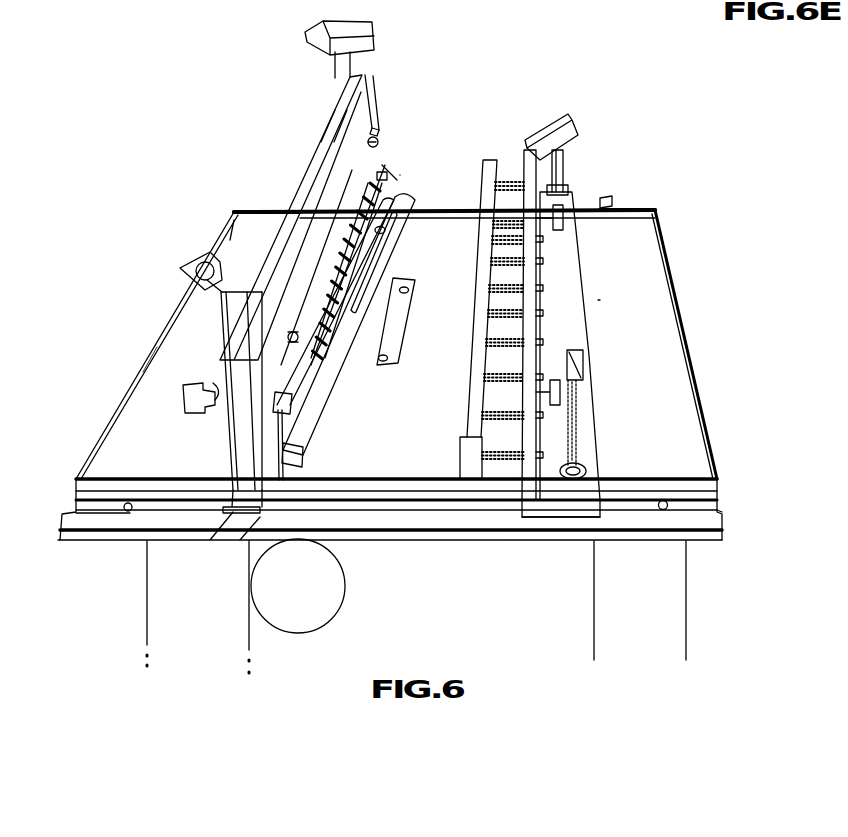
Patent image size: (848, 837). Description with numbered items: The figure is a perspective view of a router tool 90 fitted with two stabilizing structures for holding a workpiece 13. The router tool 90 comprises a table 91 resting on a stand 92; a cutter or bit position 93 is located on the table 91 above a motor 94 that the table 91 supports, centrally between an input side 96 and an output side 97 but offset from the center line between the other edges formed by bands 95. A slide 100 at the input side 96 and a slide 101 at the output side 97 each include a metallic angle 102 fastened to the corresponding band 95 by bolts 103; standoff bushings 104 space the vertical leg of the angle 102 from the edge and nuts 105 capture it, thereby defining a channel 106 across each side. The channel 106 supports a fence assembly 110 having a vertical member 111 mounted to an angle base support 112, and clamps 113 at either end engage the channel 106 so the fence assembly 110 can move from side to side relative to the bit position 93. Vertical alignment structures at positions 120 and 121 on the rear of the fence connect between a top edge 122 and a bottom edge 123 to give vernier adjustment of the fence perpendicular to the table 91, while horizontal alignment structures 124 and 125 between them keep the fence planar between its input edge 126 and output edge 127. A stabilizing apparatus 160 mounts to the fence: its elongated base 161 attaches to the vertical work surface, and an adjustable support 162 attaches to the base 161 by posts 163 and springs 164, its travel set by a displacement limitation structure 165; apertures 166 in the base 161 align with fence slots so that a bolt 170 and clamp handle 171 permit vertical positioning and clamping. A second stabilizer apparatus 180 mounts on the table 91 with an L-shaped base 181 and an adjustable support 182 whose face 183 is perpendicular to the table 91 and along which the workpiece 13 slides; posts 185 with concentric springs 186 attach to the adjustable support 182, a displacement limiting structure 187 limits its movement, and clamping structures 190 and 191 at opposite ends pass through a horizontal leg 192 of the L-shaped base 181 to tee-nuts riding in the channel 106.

The workpiece 13 is at (354, 385).
The router tool 90 is at (91, 417).
The table 91 is at (645, 295).
The stand 92 is at (147, 590).
The cutter or bit position 93 is at (400, 327).
The motor 94 is at (344, 600).
The bands 95 is at (157, 347).
The input side 96 is at (452, 180).
The output side 97 is at (427, 553).
The slide 100 is at (628, 200).
The slide 101 is at (720, 520).
The angle 102 is at (545, 518).
The bolts 103 is at (120, 512).
The standoff bushings 104 is at (130, 503).
The nuts 105 is at (118, 518).
The channel 106 is at (655, 210).
The fence assembly 110 is at (325, 116).
The vertical member 111 is at (320, 148).
The base support 112 is at (225, 520).
The clamps 113 is at (307, 40).
The vertical alignment structure 120 is at (250, 320).
The vertical alignment structure 121 is at (325, 130).
The top edge 122 is at (365, 74).
The bottom edge 123 is at (258, 542).
The horizontal alignment structure 124 is at (236, 214).
The horizontal alignment structure 125 is at (230, 244).
The input edge 126 is at (368, 95).
The output edge 127 is at (258, 520).
The stabilizing apparatus 160 is at (410, 170).
The elongated base 161 is at (378, 195).
The adjustable support 162 is at (386, 231).
The posts 163 is at (385, 170).
The springs 164 is at (402, 174).
The displacement limitation structure 165 is at (288, 337).
The apertures 166 is at (312, 295).
The bolt 170 is at (214, 411).
The clamp handle 171 is at (184, 390).
The second stabilizer apparatus 180 is at (639, 265).
The L-shaped base 181 is at (570, 320).
The adjustable support 182 is at (487, 157).
The face 183 is at (466, 450).
The posts 185 is at (508, 230).
The concentric springs 186 is at (512, 257).
The displacement limiting structure 187 is at (603, 205).
The clamping structure 190 is at (576, 437).
The clamping structure 191 is at (566, 158).
The horizontal leg 192 is at (572, 512).